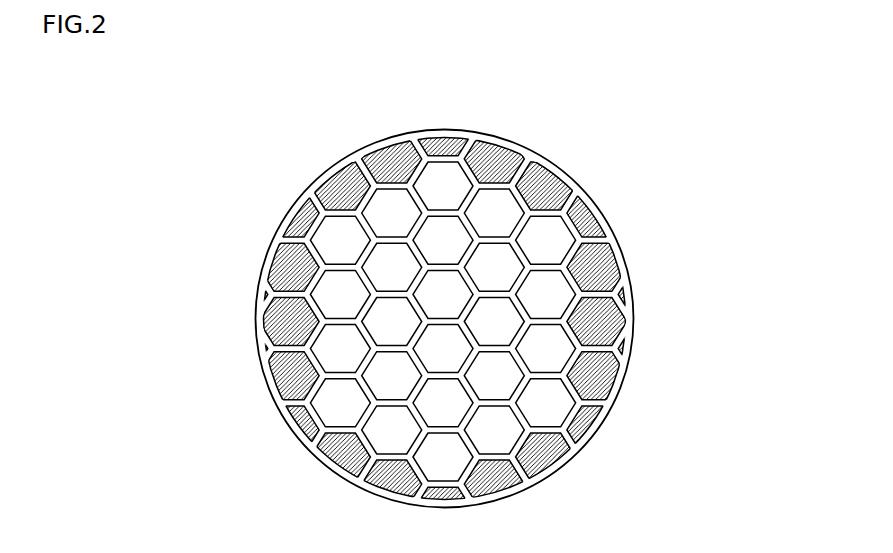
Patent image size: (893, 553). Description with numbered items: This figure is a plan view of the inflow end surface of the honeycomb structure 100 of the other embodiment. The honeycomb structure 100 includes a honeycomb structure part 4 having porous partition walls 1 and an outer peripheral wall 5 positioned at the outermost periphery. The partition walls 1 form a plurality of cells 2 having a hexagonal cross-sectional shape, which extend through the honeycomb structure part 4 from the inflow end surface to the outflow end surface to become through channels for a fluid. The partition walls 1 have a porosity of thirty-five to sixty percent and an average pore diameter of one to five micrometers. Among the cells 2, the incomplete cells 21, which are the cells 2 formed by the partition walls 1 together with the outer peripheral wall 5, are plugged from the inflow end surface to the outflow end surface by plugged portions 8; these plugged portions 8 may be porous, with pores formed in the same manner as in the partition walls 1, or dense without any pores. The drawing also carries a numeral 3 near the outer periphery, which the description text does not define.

The honeycomb structure 100 is at (731, 94).
The honeycomb structure part 4 is at (627, 258).
The outer peripheral wall 5 is at (585, 190).
The outer peripheral wall 3 is at (627, 357).
The partition walls 1 is at (365, 250).
The cells 2 is at (340, 292).
The incomplete cells 21 is at (556, 441).
The plugged portions 8 is at (441, 148).